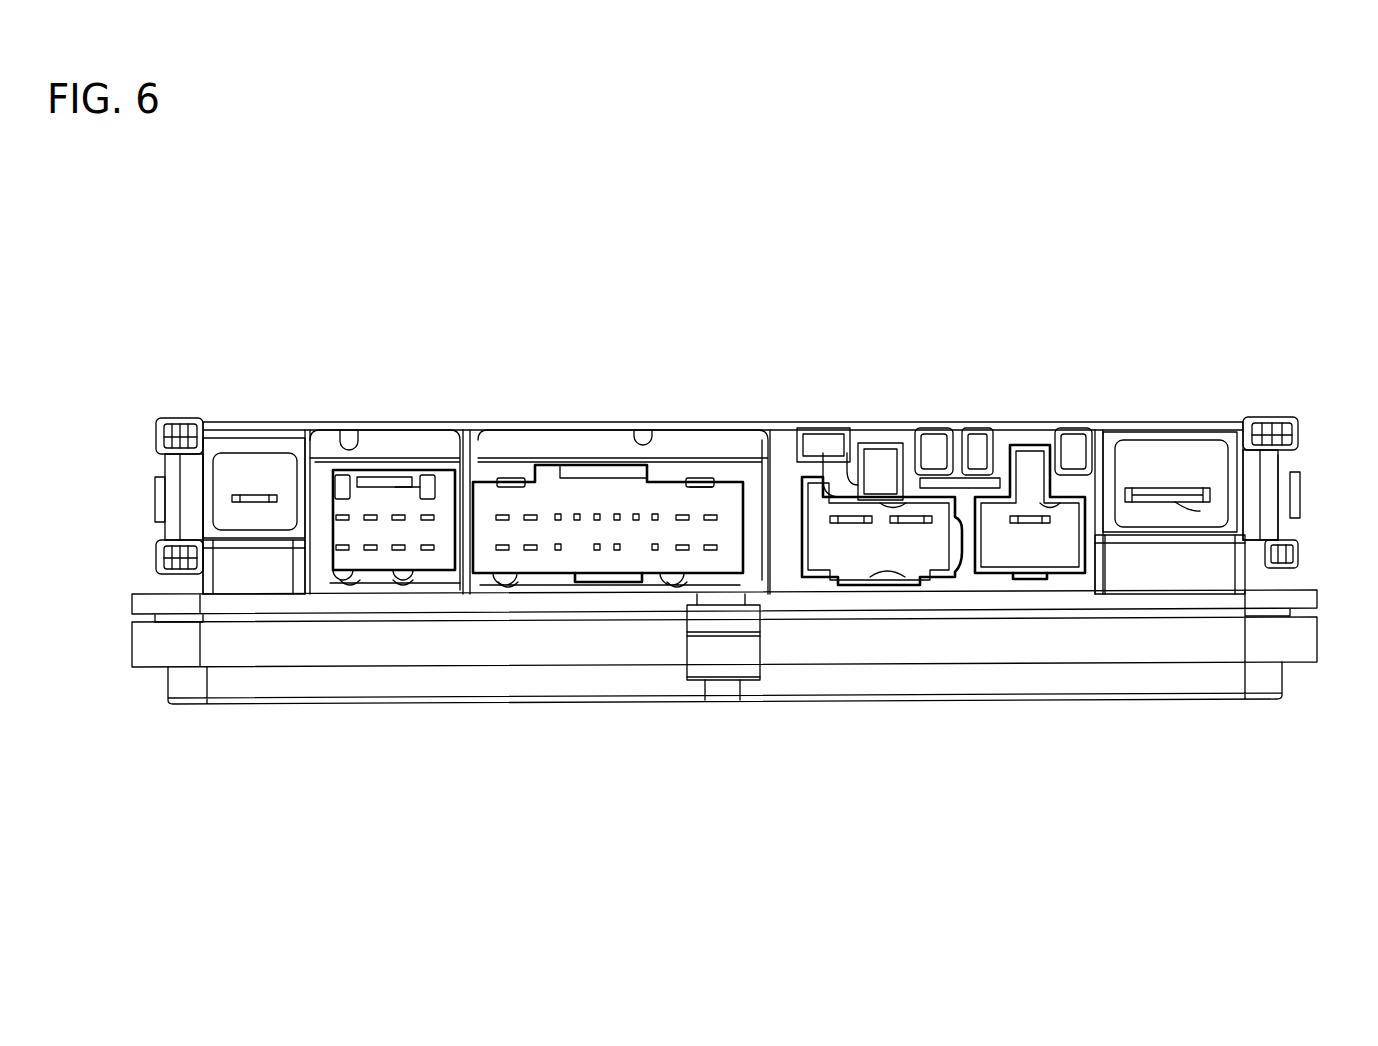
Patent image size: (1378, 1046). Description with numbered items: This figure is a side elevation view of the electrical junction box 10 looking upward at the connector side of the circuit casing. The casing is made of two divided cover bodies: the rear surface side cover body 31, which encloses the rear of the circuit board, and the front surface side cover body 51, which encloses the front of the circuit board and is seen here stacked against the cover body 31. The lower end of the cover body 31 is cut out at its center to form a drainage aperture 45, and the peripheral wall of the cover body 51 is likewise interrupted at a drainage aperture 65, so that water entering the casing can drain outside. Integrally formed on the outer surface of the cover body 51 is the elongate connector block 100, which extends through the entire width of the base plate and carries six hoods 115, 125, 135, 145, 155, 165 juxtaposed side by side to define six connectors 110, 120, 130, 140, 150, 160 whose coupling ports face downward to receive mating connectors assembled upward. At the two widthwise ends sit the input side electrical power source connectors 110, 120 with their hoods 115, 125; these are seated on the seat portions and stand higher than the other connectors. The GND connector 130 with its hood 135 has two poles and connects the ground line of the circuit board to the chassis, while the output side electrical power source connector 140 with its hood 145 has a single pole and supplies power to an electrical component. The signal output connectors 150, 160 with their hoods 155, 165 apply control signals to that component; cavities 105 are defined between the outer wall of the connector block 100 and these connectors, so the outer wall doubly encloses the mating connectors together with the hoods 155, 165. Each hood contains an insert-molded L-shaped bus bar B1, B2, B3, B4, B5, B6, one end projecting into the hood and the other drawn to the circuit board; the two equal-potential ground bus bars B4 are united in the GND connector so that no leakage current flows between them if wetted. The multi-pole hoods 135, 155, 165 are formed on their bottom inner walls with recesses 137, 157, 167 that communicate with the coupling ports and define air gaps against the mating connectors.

The connector block 100 is at (179, 402).
The electrical junction box 10 is at (188, 726).
The rear surface side cover body 31 is at (1300, 653).
The front surface side cover body 51 is at (1293, 594).
The drainage aperture 45 is at (753, 657).
The drainage aperture 65 is at (700, 633).
The cavities 105 is at (645, 430).
The input side electrical power source connector 110 is at (258, 436).
The hood 115 is at (247, 464).
The input side electrical power source connector 120 is at (1234, 460).
The hood 125 is at (1196, 440).
The GND connector 130 is at (885, 550).
The hood 135 is at (913, 508).
The recess 137 is at (882, 570).
The output side electrical power source connector 140 is at (1039, 530).
The hood 145 is at (1055, 510).
The signal output connector 150 is at (366, 554).
The hood 155 is at (408, 486).
The recess 157 is at (407, 580).
The signal output connector 160 is at (642, 534).
The hood 165 is at (700, 507).
The recess 167 is at (676, 570).
The bus bar B1 is at (268, 494).
The bus bar B2 is at (1200, 511).
The bus bar B3 is at (905, 525).
The bus bar B4 is at (1033, 525).
The bus bar B5 is at (371, 550).
The bus bar B6 is at (557, 514).